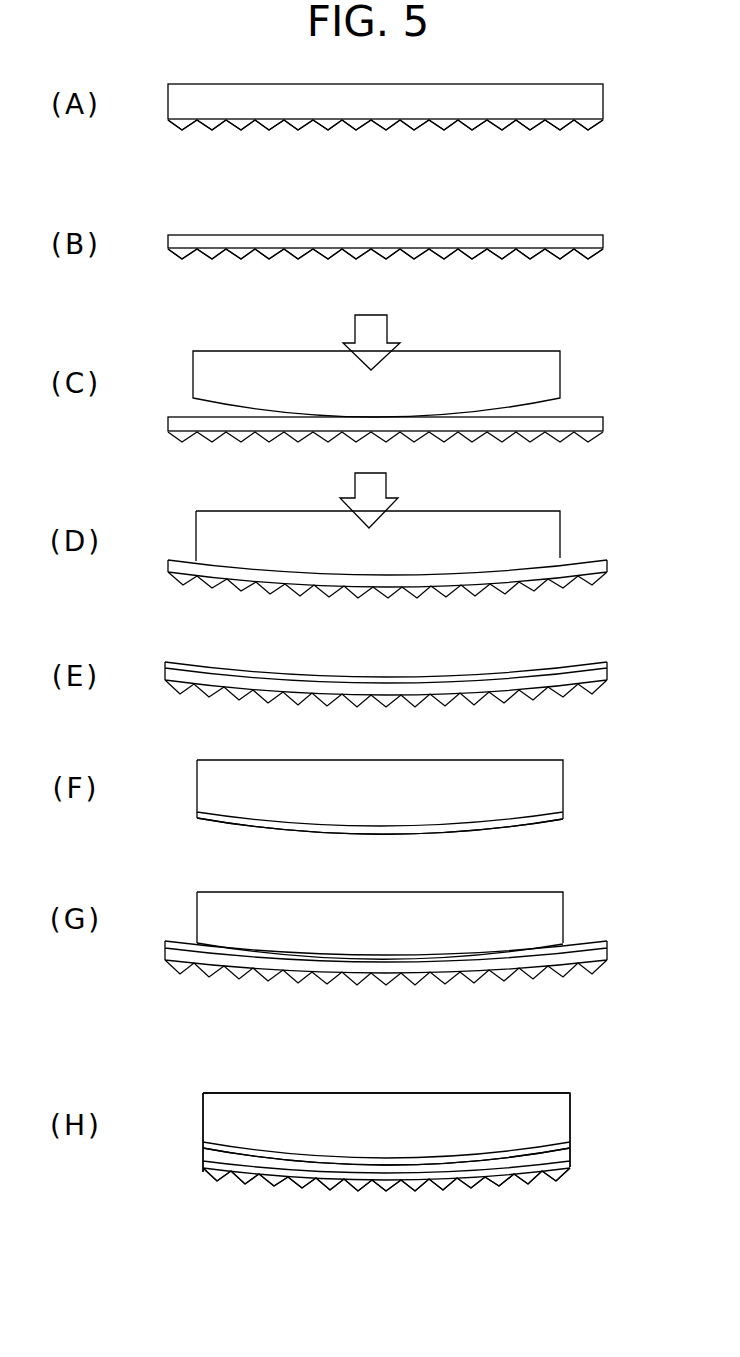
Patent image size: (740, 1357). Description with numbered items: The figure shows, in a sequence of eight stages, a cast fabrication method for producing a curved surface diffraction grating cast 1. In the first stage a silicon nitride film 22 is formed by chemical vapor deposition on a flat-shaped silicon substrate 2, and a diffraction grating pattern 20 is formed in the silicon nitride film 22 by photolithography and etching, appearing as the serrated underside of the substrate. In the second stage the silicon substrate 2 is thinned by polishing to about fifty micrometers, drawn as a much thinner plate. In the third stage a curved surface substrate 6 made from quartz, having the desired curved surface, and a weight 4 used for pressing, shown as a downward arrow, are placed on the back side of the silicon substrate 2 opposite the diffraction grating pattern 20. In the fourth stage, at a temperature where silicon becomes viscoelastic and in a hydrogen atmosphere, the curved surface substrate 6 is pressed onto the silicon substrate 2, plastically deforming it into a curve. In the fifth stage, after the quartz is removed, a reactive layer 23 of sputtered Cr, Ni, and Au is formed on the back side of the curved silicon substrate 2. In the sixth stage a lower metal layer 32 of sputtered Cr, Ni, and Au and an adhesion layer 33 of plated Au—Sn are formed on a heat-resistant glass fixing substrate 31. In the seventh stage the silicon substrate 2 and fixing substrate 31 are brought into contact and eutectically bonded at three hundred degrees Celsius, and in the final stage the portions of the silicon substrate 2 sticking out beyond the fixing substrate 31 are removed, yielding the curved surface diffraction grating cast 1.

The curved surface diffraction grating cast 1 is at (627, 1135).
The silicon substrate 2 is at (213, 95).
The weight 4 is at (372, 340).
The curved surface substrate 6 is at (213, 362).
The diffraction grating pattern 20 is at (320, 130).
The silicon nitride film 22 is at (477, 128).
The reactive layer 23 is at (213, 667).
The fixing substrate 31 is at (215, 777).
The lower metal layer 32 is at (518, 822).
The adhesion layer 33 is at (383, 991).